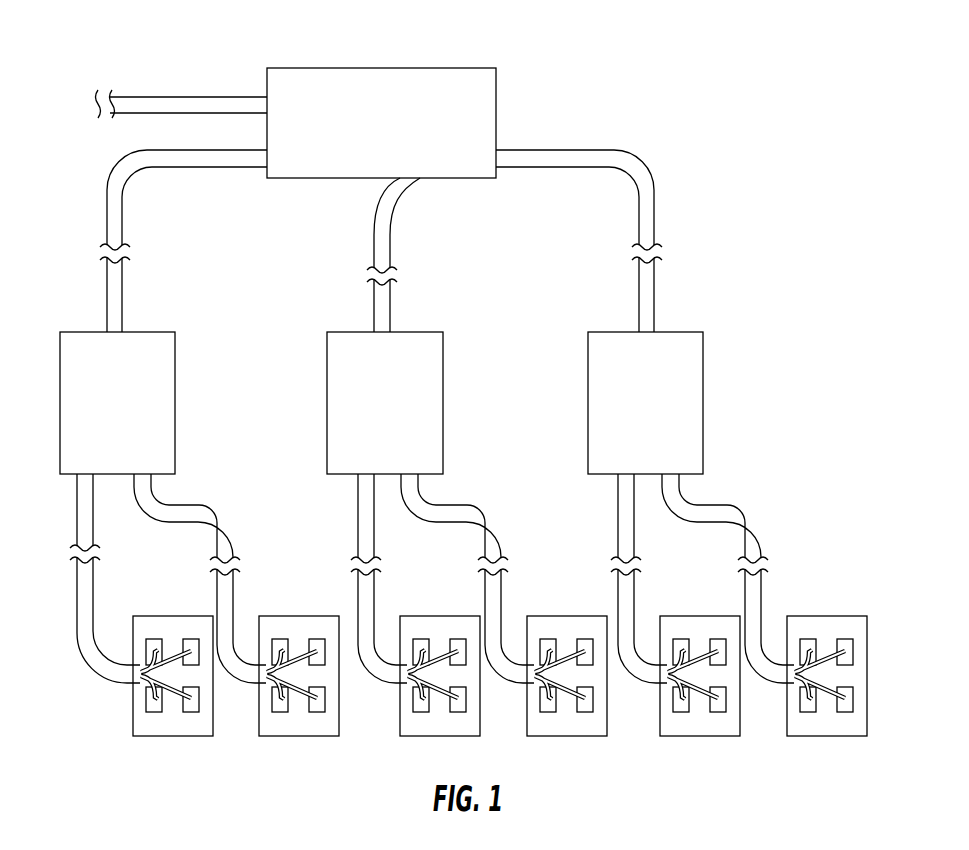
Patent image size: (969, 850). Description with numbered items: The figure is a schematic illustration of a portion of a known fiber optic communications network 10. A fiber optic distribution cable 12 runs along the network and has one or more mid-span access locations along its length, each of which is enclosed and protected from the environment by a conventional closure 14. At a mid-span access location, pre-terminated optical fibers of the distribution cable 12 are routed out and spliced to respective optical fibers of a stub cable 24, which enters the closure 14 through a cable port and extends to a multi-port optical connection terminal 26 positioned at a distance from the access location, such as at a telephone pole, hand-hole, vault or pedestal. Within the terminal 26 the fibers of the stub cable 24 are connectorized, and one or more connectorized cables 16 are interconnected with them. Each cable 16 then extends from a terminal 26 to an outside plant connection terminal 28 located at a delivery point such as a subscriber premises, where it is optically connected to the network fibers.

The fiber optic communications network 10 is at (688, 90).
The fiber optic distribution cable 12 is at (191, 94).
The closure 14 is at (430, 88).
The stub cable 24 is at (109, 165).
The multi-port optical connection terminal 26 is at (95, 387).
The connectorized cable 16 is at (67, 611).
The outside plant connection terminal 28 is at (172, 744).